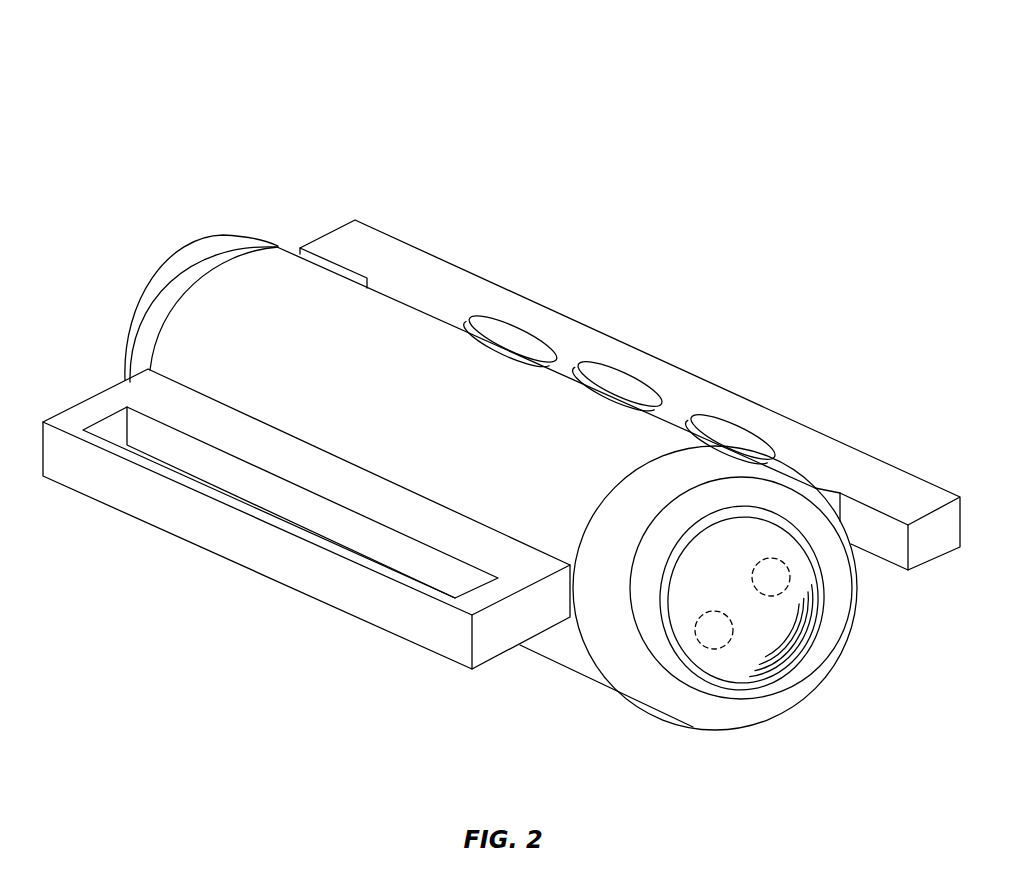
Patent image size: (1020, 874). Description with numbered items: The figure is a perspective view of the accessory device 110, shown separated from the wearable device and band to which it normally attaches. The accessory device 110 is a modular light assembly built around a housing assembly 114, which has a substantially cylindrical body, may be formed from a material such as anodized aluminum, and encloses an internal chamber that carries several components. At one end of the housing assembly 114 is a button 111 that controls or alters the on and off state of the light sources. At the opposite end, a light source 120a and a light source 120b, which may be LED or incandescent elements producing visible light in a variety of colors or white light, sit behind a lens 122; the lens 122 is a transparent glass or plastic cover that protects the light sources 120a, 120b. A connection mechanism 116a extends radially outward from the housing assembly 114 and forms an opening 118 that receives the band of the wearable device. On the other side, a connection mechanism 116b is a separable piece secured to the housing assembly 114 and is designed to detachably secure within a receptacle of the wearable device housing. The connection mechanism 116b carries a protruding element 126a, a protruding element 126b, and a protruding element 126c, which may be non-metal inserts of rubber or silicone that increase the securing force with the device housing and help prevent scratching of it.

The accessory device 110 is at (812, 95).
The button 111 is at (136, 303).
The housing assembly 114 is at (285, 246).
The connection mechanism 116a is at (257, 573).
The connection mechanism 116b is at (887, 462).
The opening 118 is at (172, 472).
The light source 120a is at (712, 650).
The light source 120b is at (770, 598).
The lens 122 is at (818, 631).
The protruding element 126a is at (533, 347).
The protruding element 126b is at (630, 388).
The protruding element 126c is at (750, 445).